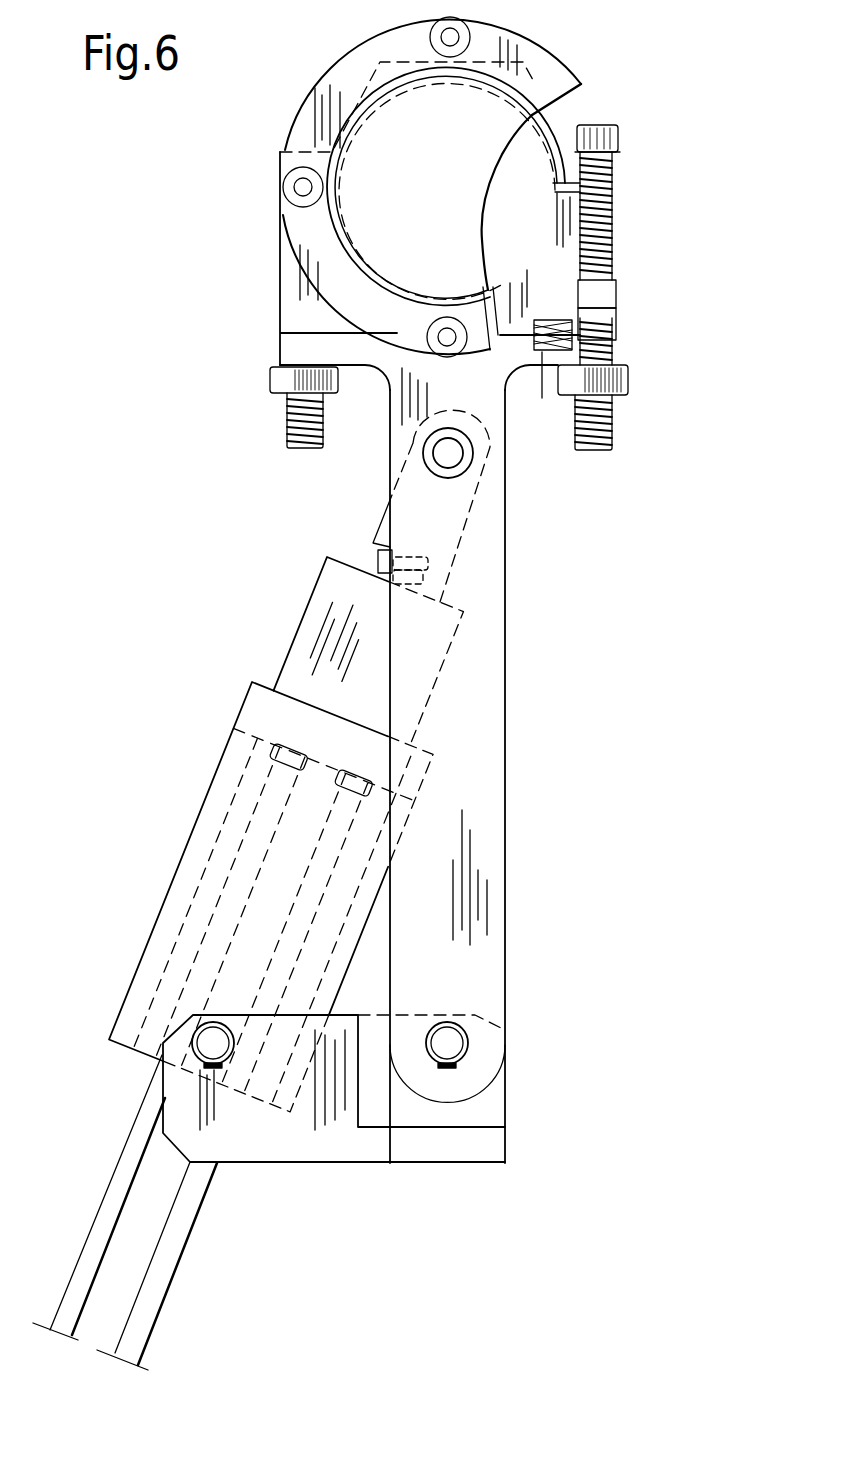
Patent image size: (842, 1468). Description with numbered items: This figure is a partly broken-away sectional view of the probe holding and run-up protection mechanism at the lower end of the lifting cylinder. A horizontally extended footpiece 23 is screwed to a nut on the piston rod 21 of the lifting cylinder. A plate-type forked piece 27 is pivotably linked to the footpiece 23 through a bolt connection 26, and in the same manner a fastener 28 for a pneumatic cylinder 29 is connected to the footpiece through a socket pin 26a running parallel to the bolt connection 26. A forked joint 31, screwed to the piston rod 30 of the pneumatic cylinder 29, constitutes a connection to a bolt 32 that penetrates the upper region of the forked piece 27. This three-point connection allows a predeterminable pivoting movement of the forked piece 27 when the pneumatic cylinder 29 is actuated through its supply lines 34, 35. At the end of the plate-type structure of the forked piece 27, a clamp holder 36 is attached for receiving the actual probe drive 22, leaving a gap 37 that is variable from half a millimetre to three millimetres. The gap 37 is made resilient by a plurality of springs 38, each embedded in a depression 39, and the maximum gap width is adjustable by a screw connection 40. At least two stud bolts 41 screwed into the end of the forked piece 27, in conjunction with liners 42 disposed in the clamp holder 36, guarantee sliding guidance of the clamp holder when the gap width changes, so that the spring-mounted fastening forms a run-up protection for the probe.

The piston rod 21 is at (458, 1178).
The probe drive 22 is at (538, 167).
The footpiece 23 is at (290, 1150).
The bolt connection 26 is at (453, 1040).
The socket pin 26a is at (195, 1045).
The forked piece 27 is at (487, 700).
The fastener 28 is at (186, 873).
The pneumatic cylinder 29 is at (303, 644).
The piston rod 30 is at (387, 573).
The forked joint 31 is at (438, 540).
The bolt 32 is at (440, 457).
The supply line 34 is at (105, 1213).
The supply line 35 is at (148, 1300).
The clamp holder 36 is at (600, 127).
The gap 37 is at (280, 339).
The spring 38 is at (549, 320).
The depression 39 is at (535, 393).
The screw connection 40 is at (610, 418).
The stud bolt 41 is at (602, 322).
The liner 42 is at (618, 322).